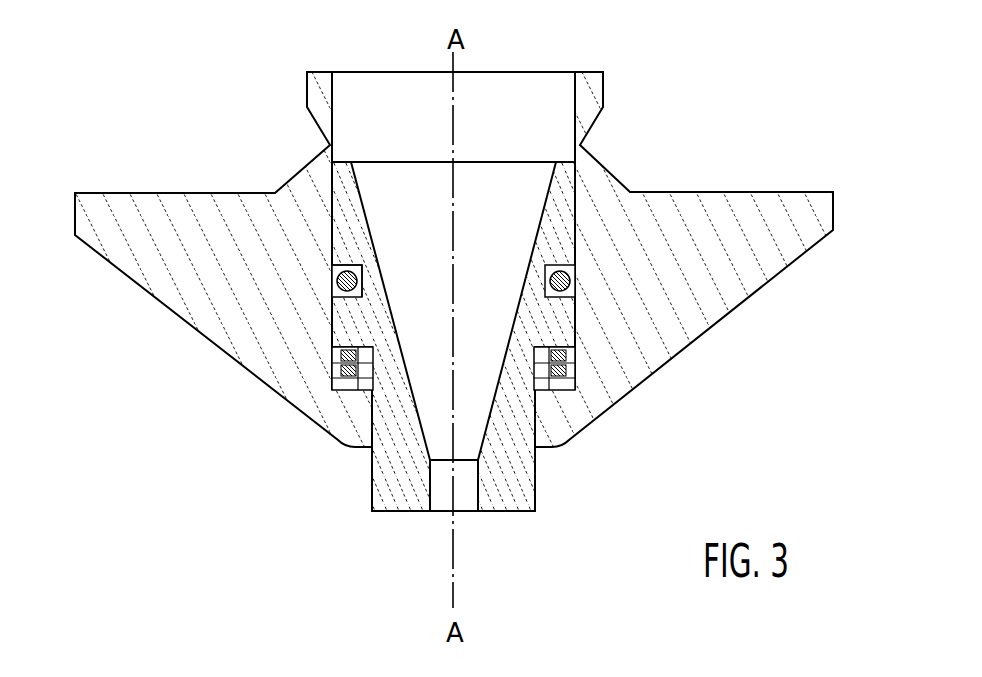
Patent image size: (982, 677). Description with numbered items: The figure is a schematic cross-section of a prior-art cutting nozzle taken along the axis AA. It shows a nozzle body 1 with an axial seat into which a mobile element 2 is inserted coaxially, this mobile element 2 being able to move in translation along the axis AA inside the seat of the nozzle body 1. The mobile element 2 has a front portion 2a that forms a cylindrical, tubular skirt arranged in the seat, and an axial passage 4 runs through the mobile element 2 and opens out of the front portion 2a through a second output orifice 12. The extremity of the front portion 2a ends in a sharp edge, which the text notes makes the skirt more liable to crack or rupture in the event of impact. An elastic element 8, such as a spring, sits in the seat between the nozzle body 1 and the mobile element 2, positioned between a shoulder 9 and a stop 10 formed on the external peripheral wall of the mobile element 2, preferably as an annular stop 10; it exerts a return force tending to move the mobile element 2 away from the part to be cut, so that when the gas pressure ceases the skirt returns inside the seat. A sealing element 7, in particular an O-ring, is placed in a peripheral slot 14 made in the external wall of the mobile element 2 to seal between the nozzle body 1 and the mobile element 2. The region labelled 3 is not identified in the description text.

The nozzle body 1 is at (672, 318).
The mobile element 2 is at (406, 428).
The front portion 2a is at (382, 517).
The tapered flow channel 3 is at (397, 268).
The axial passage 4 is at (489, 256).
The sealing element 7 is at (336, 284).
The elastic element 8 is at (352, 372).
The shoulder 9 is at (559, 396).
The stop 10 is at (548, 328).
The second output orifice 12 is at (463, 513).
The peripheral slot 14 is at (367, 266).